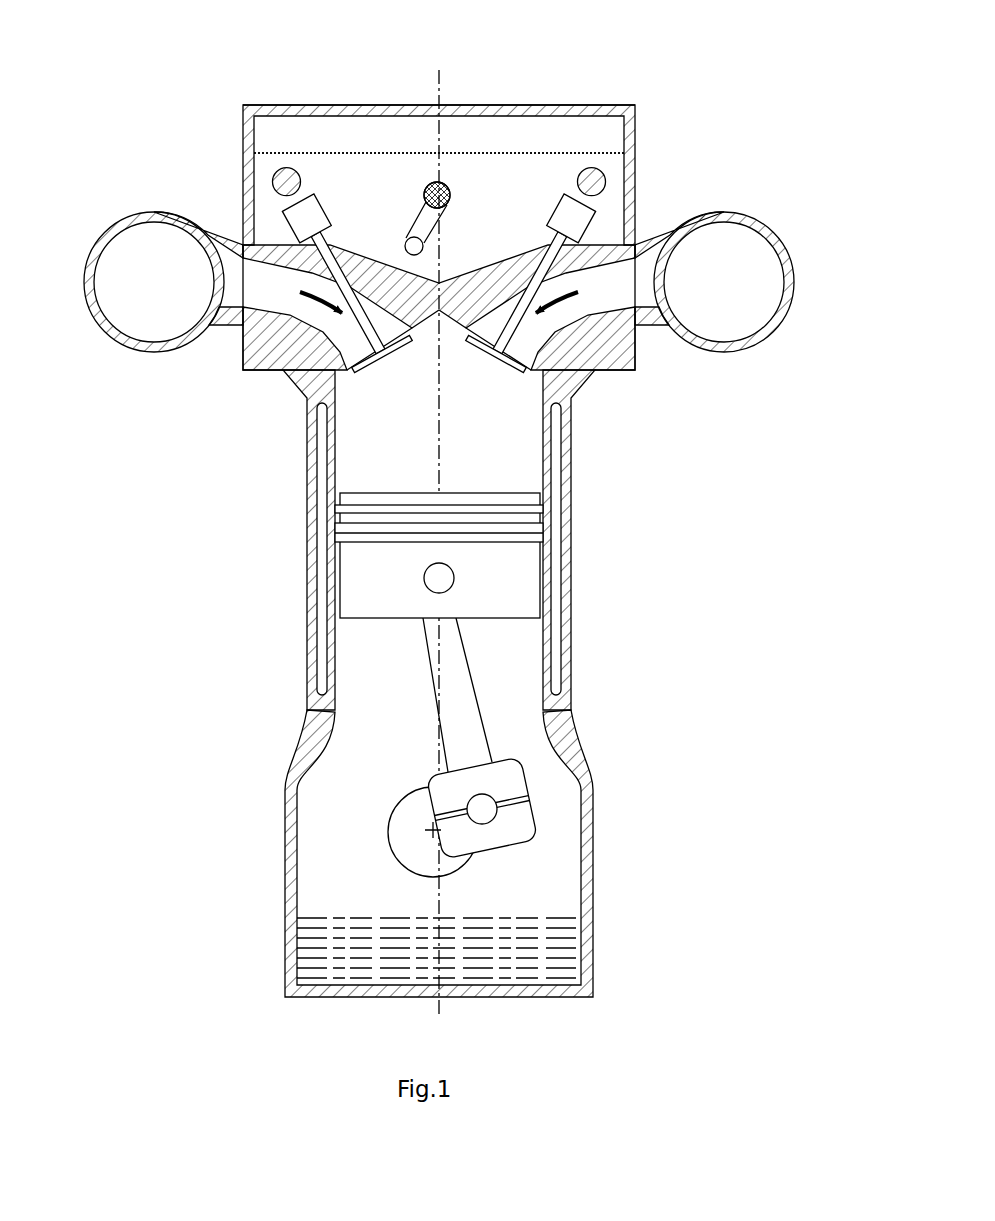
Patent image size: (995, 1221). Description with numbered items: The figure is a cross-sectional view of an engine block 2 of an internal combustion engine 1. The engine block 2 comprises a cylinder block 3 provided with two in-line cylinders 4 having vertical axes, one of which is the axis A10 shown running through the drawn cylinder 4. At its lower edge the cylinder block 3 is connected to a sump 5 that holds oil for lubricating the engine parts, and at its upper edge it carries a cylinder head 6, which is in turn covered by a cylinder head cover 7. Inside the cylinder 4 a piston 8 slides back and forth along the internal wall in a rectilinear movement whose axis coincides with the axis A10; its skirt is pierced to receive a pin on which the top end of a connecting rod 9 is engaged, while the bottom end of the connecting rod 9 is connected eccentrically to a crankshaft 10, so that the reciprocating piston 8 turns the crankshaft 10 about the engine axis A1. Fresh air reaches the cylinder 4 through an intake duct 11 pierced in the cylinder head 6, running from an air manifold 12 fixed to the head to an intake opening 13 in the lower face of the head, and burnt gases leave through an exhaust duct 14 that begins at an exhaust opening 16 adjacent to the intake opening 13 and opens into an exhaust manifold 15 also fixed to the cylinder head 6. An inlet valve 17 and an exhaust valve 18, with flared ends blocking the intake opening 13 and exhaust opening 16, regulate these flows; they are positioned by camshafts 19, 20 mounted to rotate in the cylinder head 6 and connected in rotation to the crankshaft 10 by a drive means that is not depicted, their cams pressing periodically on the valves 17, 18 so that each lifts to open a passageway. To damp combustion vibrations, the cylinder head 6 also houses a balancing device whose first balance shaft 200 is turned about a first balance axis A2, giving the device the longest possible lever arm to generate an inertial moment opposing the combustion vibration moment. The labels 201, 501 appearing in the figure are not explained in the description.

The internal combustion engine 1 is at (212, 50).
The engine block 2 is at (652, 88).
The cylinder block 3 is at (580, 482).
The cylinder 4 is at (538, 676).
The sump 5 is at (279, 876).
The cylinder head 6 is at (645, 165).
The cylinder head cover 7 is at (503, 96).
The piston 8 is at (337, 575).
The connecting rod 9 is at (484, 688).
The crankshaft 10 is at (388, 803).
The intake duct 11 is at (283, 301).
The air manifold 12 is at (124, 348).
The intake opening 13 is at (364, 380).
The exhaust duct 14 is at (620, 301).
The exhaust manifold 15 is at (771, 348).
The exhaust opening 16 is at (518, 380).
The inlet valve 17 is at (335, 232).
The exhaust valve 18 is at (544, 232).
The camshaft 19 is at (286, 166).
The camshaft 20 is at (592, 167).
The first balance shaft 200 is at (386, 117).
The spark plug 201 is at (420, 247).
The spark plug 501 is at (437, 195).
The engine axis A1 is at (428, 831).
The first balance axis A2 is at (455, 118).
The cylinder axis A10 is at (438, 420).